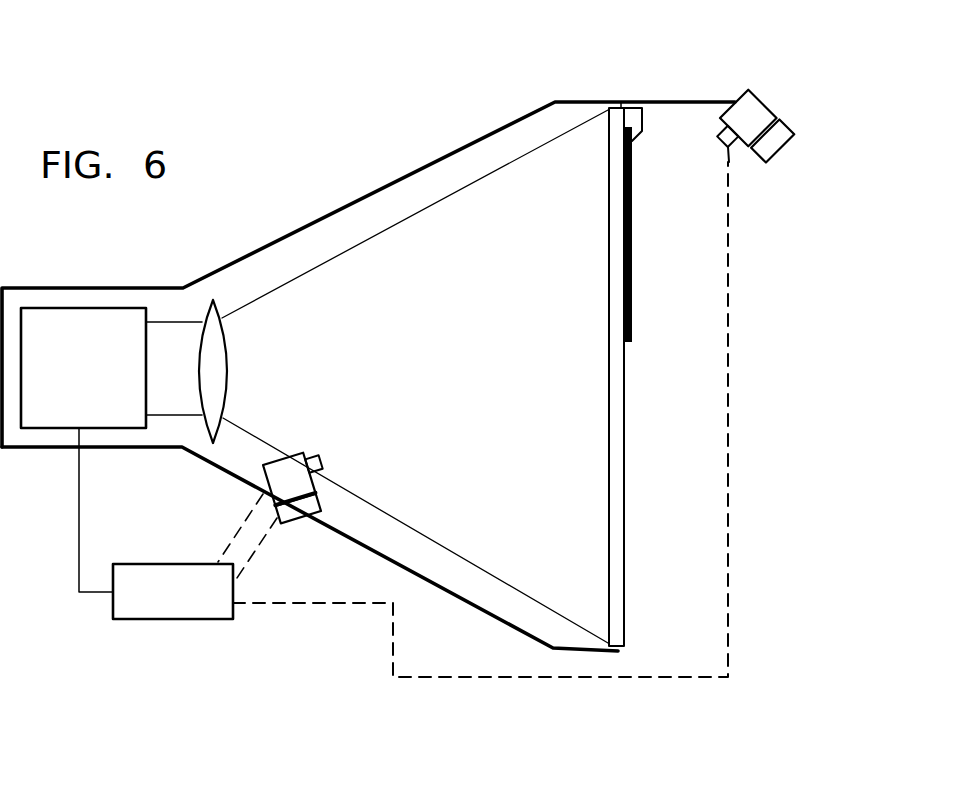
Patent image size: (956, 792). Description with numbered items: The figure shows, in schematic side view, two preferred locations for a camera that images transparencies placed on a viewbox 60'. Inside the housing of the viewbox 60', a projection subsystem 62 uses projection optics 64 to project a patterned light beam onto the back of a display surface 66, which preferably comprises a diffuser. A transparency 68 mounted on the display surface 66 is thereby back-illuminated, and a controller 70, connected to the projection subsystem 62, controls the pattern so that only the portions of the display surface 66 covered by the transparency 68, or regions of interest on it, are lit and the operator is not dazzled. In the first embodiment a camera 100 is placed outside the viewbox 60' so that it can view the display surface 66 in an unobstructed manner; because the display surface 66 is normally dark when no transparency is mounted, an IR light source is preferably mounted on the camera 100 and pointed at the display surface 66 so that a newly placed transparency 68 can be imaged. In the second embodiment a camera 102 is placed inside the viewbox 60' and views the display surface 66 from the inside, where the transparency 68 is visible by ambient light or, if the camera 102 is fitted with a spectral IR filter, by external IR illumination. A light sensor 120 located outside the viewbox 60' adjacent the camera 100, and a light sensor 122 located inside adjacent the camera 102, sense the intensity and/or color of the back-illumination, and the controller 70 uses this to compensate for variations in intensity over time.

The viewbox 60' is at (368, 376).
The projection subsystem 62 is at (97, 307).
The projection optics 64 is at (227, 358).
The display surface 66 is at (625, 386).
The transparency 68 is at (631, 276).
The controller 70 is at (140, 563).
The camera 100 is at (727, 103).
The camera 102 is at (305, 455).
The light sensor 120 is at (767, 152).
The light sensor 122 is at (313, 483).